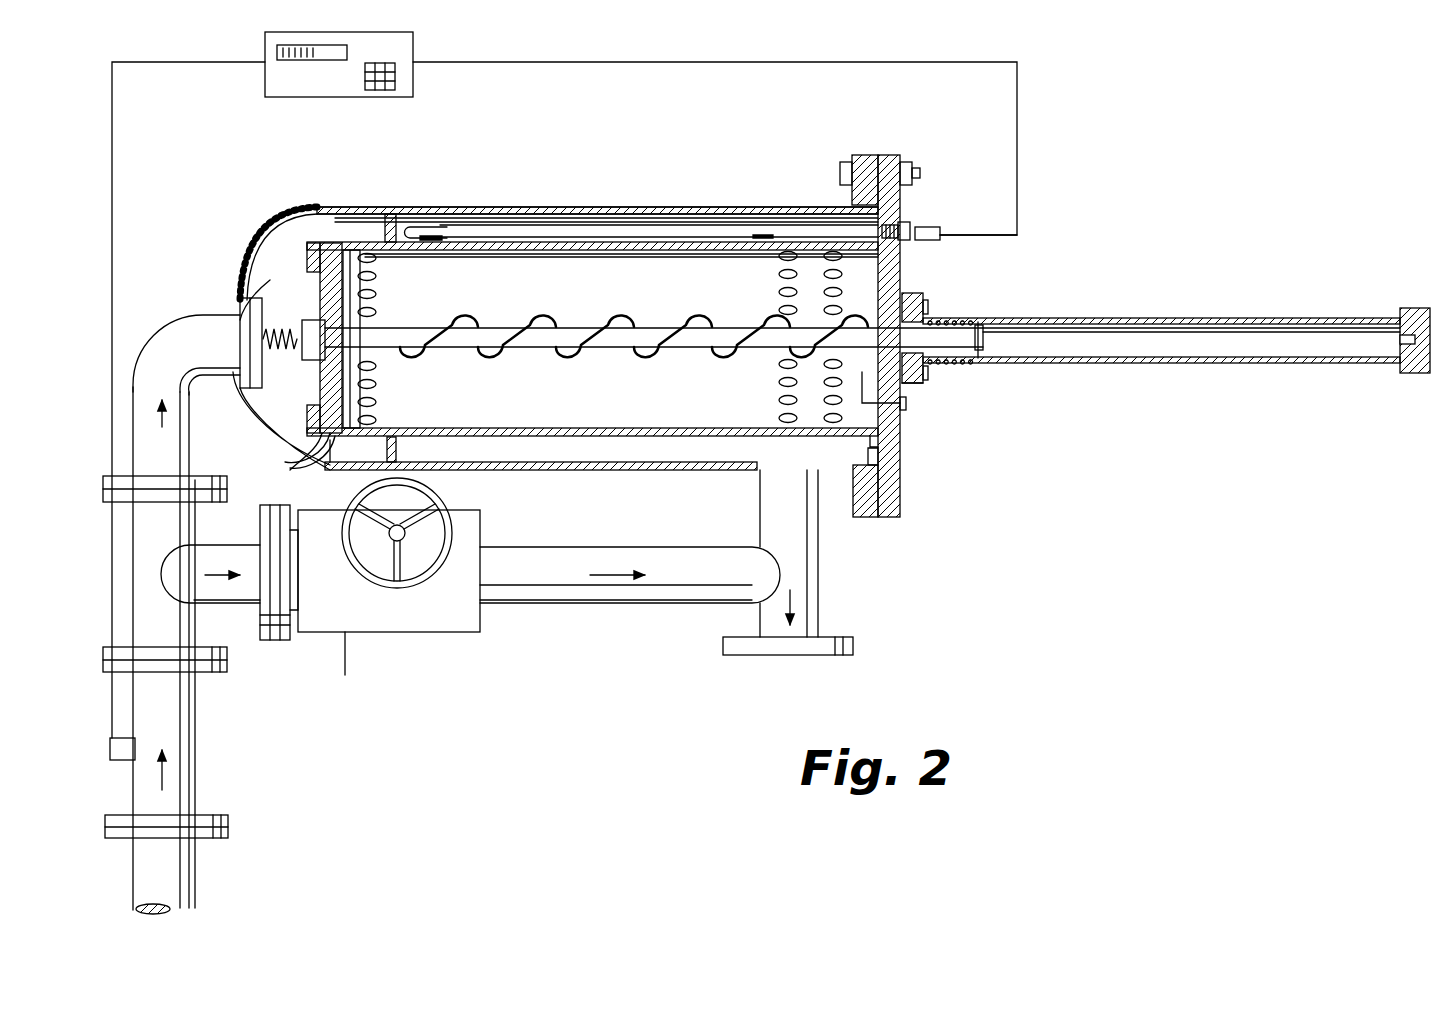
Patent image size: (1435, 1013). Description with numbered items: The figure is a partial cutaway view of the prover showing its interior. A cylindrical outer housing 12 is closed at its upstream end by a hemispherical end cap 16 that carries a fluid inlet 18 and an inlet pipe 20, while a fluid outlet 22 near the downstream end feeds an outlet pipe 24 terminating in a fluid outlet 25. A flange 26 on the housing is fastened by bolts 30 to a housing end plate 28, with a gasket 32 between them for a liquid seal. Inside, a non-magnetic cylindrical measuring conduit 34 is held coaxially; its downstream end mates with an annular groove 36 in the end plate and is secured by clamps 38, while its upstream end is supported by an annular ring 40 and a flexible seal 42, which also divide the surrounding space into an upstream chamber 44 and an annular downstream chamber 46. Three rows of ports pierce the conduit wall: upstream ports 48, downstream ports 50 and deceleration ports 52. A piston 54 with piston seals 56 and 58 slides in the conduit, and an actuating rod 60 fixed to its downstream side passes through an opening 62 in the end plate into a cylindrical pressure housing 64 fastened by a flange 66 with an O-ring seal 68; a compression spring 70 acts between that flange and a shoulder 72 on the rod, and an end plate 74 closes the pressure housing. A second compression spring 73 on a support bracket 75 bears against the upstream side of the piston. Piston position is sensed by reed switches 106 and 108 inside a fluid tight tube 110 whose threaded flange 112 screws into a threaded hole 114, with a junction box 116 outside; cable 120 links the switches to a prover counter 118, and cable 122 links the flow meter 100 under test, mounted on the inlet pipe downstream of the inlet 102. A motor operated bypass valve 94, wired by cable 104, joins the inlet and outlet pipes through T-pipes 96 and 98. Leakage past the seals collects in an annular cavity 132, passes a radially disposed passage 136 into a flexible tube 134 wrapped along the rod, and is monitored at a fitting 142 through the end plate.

The cylindrical outer housing 12 is at (525, 200).
The hemispherical end cap 16 is at (258, 437).
The fluid inlet 18 is at (240, 310).
The inlet pipe 20 is at (150, 302).
The fluid outlet 22 is at (780, 478).
The outlet pipe 24 is at (820, 582).
The fluid outlet 25 is at (790, 665).
The flange 26 is at (866, 155).
The housing end plate 28 is at (890, 155).
The bolts 30 is at (840, 172).
The gasket 32 is at (868, 520).
The cylindrical measuring conduit 34 is at (640, 210).
The annular groove 36 is at (888, 432).
The clamps 38 is at (885, 455).
The annular ring 40 is at (392, 207).
The flexible seal 42 is at (388, 214).
The upstream chamber 44 is at (298, 260).
The annular downstream chamber 46 is at (612, 437).
The upstream ports 48 is at (380, 297).
The downstream ports 50 is at (778, 280).
The deceleration ports 52 is at (842, 300).
The piston 54 is at (345, 260).
The piston seal 56 is at (295, 460).
The piston seal 58 is at (332, 460).
The actuating rod 60 is at (572, 328).
The opening 62 is at (912, 293).
The cylindrical pressure housing 64 is at (1160, 318).
The flange 66 is at (918, 383).
The O-ring seal 68 is at (920, 295).
The compression spring 70 is at (960, 320).
The shoulder 72 is at (985, 325).
The second compression spring 73 is at (285, 352).
The end plate 74 is at (1425, 290).
The support bracket 75 is at (245, 285).
The motor operated bypass valve 94 is at (480, 525).
The T-pipe 96 is at (225, 540).
The T-pipe 98 is at (620, 613).
The flow meter 100 is at (195, 745).
The inlet 102 is at (170, 915).
The cable 104 is at (345, 660).
The reed switch 106 is at (432, 228).
The reed switch 108 is at (760, 235).
The fluid tight tube 110 is at (570, 222).
The threaded flange 112 is at (910, 228).
The threaded hole 114 is at (900, 225).
The junction box 116 is at (930, 227).
The prover counter 118 is at (416, 45).
The cable 120 is at (606, 62).
The cable 122 is at (112, 140).
The annular cavity 132 is at (308, 452).
The flexible tube 134 is at (570, 355).
The radially disposed passage 136 is at (290, 255).
The fitting 142 is at (906, 403).